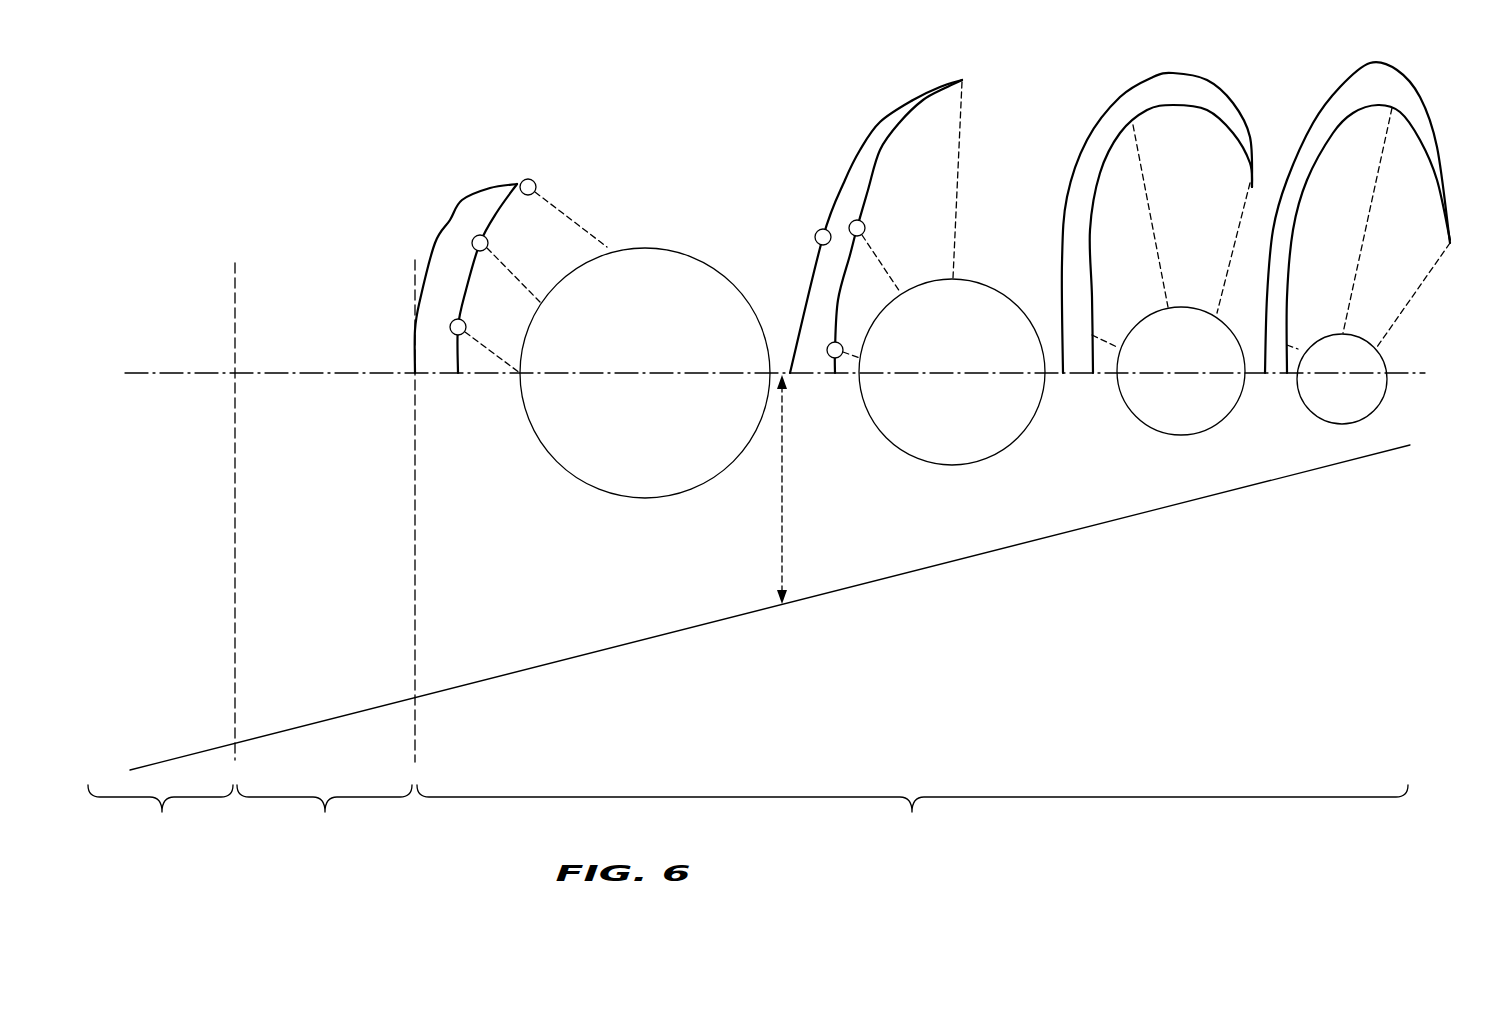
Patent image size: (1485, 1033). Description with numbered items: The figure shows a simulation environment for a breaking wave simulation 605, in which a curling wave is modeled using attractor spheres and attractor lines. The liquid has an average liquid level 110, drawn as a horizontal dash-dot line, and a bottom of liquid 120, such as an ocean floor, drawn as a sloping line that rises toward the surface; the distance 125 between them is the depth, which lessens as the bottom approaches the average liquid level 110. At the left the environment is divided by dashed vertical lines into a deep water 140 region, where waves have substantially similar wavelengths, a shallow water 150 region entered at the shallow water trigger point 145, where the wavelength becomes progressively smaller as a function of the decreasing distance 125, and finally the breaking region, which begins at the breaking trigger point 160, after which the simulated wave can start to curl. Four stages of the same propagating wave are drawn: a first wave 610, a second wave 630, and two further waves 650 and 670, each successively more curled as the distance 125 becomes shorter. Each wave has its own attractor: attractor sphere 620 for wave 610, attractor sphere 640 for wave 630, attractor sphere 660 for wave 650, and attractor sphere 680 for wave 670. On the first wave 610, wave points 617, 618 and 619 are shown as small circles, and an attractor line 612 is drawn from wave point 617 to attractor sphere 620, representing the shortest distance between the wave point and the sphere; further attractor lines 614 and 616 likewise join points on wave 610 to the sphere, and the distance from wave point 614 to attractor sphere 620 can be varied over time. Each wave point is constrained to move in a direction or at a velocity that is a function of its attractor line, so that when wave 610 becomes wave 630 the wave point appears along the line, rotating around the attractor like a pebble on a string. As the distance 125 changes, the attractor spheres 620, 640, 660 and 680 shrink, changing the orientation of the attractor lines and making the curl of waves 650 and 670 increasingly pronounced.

The average liquid level 110 is at (377, 372).
The bottom of liquid 120 is at (642, 641).
The distance 125 is at (781, 489).
The deep water 140 is at (160, 839).
The shallow water trigger point 145 is at (234, 348).
The shallow water 150 is at (324, 839).
The breaking trigger point 160 is at (414, 278).
The breaking wave simulation 605 is at (912, 840).
The first wave 610 is at (485, 185).
The attractor line 612 is at (488, 350).
The wave point 614 is at (510, 272).
The attractor line 616 is at (568, 216).
The wave point 617 is at (466, 321).
The wave point 618 is at (488, 245).
The wave point 619 is at (529, 179).
The attractor sphere 620 is at (628, 385).
The second wave 630 is at (882, 126).
The attractor sphere 640 is at (935, 385).
The wave 650 is at (1108, 92).
The attractor sphere 660 is at (1164, 387).
The wave 670 is at (1334, 84).
The attractor sphere 680 is at (1325, 392).